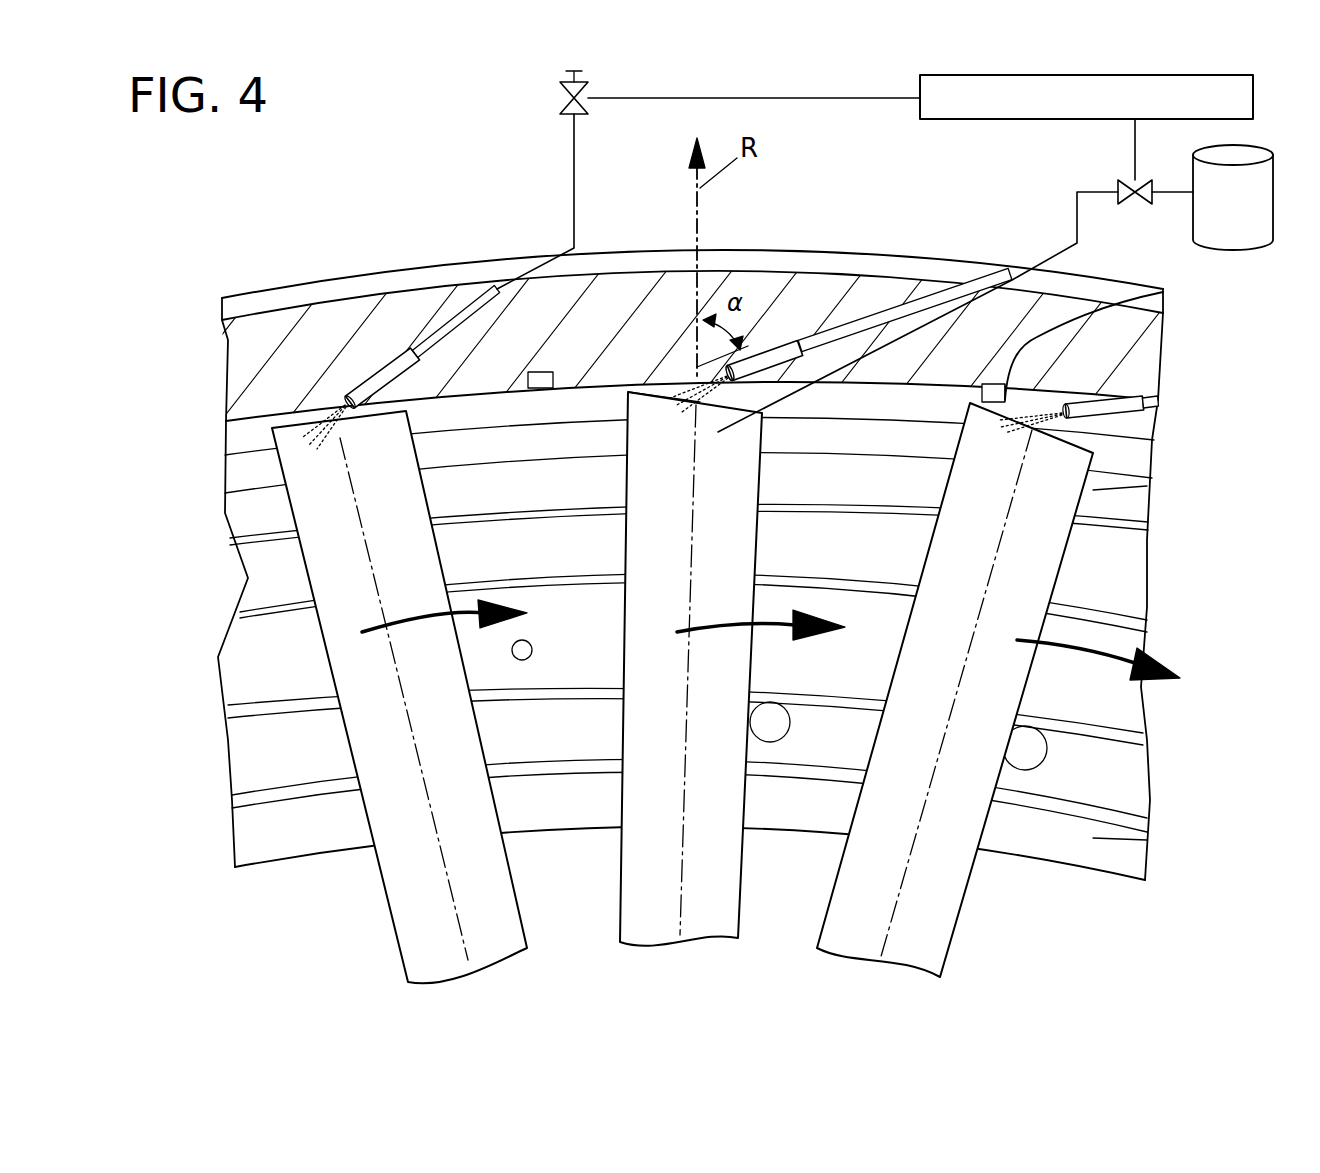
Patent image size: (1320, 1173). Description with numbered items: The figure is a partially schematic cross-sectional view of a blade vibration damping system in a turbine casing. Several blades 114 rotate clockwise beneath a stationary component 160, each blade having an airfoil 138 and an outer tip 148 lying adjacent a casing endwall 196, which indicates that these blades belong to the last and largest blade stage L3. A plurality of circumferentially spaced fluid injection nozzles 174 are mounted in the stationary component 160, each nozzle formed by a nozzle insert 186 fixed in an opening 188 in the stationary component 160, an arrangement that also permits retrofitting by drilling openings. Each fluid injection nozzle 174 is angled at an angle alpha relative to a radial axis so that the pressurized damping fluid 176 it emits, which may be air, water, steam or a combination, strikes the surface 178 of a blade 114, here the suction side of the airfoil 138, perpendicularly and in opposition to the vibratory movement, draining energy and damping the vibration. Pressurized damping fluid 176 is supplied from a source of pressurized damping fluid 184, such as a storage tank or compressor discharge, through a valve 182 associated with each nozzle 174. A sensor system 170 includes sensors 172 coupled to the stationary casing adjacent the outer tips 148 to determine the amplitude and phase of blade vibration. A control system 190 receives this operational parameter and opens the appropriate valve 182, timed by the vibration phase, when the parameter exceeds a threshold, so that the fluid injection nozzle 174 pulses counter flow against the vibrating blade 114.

The blade 114 is at (320, 517).
The airfoil 138 is at (396, 579).
The outer tip 148 is at (648, 388).
The stationary component 160 is at (750, 322).
The sensor system 170 is at (1020, 387).
The sensor 172 is at (543, 370).
The fluid injection nozzle 174 is at (400, 358).
The pressurized damping fluid 176 is at (690, 378).
The surface 178 is at (1017, 296).
The valve 182 is at (560, 87).
The source of pressurized damping fluid 184 is at (1257, 218).
The nozzle insert 186 is at (798, 346).
The opening 188 is at (928, 303).
The control system 190 is at (1210, 111).
The casing endwall 196 is at (1097, 494).
The blade stage L3 is at (1093, 838).